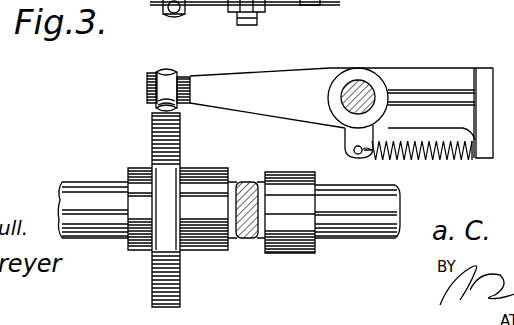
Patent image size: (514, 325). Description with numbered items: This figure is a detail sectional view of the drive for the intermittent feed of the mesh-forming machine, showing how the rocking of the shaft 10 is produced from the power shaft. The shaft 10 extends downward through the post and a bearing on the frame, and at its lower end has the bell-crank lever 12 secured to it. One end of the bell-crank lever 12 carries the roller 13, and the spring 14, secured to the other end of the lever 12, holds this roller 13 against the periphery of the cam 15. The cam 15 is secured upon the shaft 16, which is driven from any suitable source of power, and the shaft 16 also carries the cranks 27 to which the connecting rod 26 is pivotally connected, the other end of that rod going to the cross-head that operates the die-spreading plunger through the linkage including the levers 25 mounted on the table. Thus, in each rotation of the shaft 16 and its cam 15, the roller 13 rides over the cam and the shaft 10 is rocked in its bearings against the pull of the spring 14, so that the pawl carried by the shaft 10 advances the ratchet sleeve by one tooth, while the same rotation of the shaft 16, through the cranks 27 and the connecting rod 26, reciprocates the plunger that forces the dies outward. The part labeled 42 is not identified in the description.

The shaft 10 is at (362, 84).
The bell-crank lever 12 is at (341, 113).
The roller 13 is at (173, 68).
The spring 14 is at (418, 157).
The cam 15 is at (156, 144).
The shaft 16 is at (80, 193).
The levers 25 is at (272, 5).
The connecting rod 26 is at (249, 182).
The cranks 27 is at (298, 173).
The nut 42 is at (210, 0).